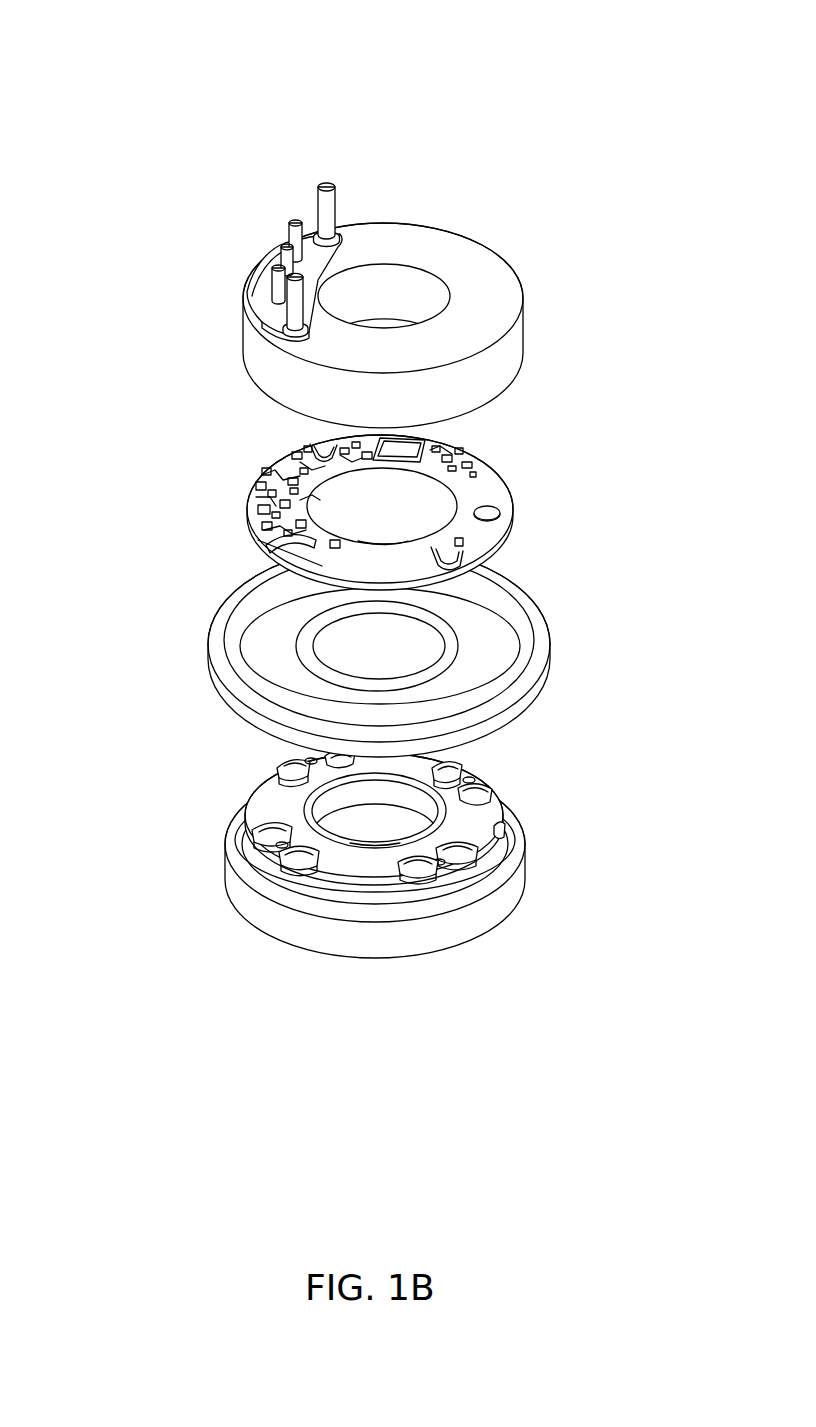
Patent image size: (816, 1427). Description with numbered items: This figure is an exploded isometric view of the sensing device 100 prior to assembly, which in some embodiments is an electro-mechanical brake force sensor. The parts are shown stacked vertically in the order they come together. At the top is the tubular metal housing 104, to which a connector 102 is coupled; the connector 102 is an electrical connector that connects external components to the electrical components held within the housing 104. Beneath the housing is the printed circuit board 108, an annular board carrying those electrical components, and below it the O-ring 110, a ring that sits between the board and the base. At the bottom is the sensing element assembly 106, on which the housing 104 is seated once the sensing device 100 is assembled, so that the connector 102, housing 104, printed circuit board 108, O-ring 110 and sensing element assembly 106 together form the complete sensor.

The sensing device 100 is at (70, 40).
The connector 102 is at (283, 218).
The metal housing 104 is at (520, 289).
The sensing element assembly 106 is at (489, 927).
The printed circuit board 108 is at (510, 484).
The O-ring 110 is at (458, 667).